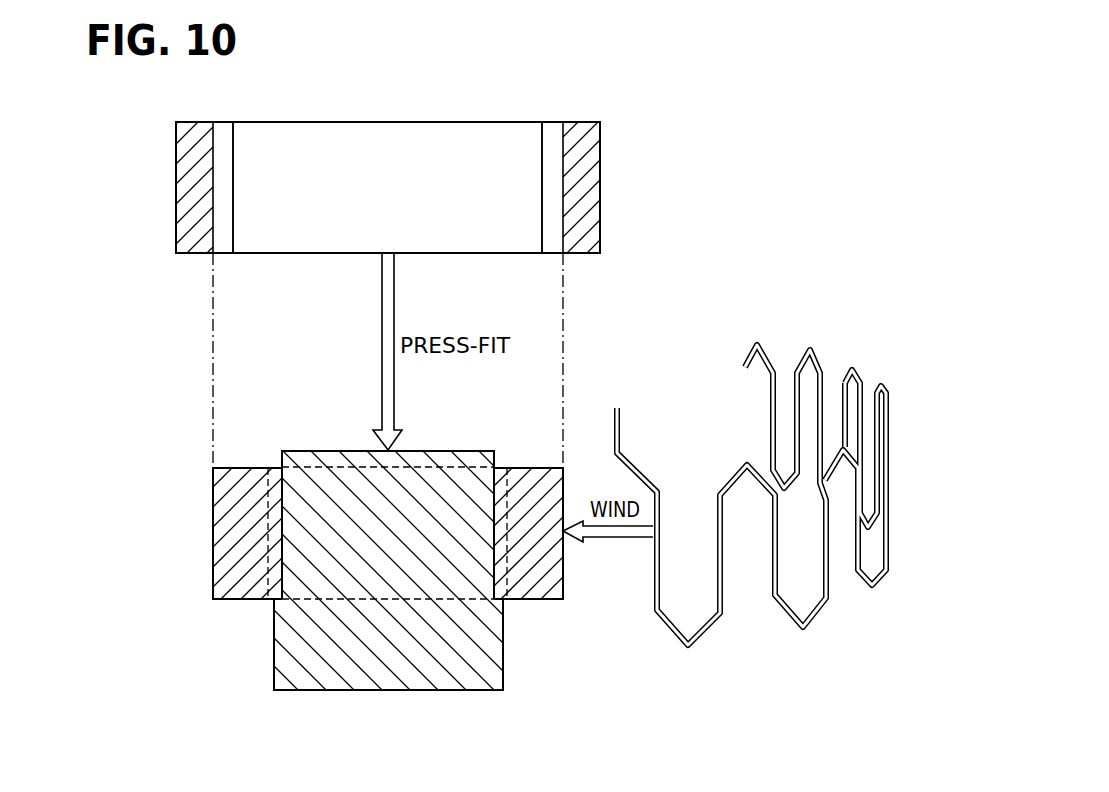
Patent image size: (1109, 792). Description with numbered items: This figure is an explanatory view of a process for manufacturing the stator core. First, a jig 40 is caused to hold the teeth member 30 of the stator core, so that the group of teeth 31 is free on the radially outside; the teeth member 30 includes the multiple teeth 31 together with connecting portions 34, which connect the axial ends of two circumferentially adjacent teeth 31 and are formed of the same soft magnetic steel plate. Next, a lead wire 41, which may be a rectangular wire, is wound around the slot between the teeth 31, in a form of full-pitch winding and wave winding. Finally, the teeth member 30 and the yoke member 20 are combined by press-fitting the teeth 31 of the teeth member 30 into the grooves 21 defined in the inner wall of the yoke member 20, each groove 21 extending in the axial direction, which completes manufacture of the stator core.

The yoke member 20 is at (184, 185).
The groove 21 is at (215, 165).
The teeth member 30 is at (223, 533).
The teeth 31 is at (244, 470).
The connecting portions 34 is at (274, 470).
The jig 40 is at (282, 652).
The lead wire 41 is at (810, 348).